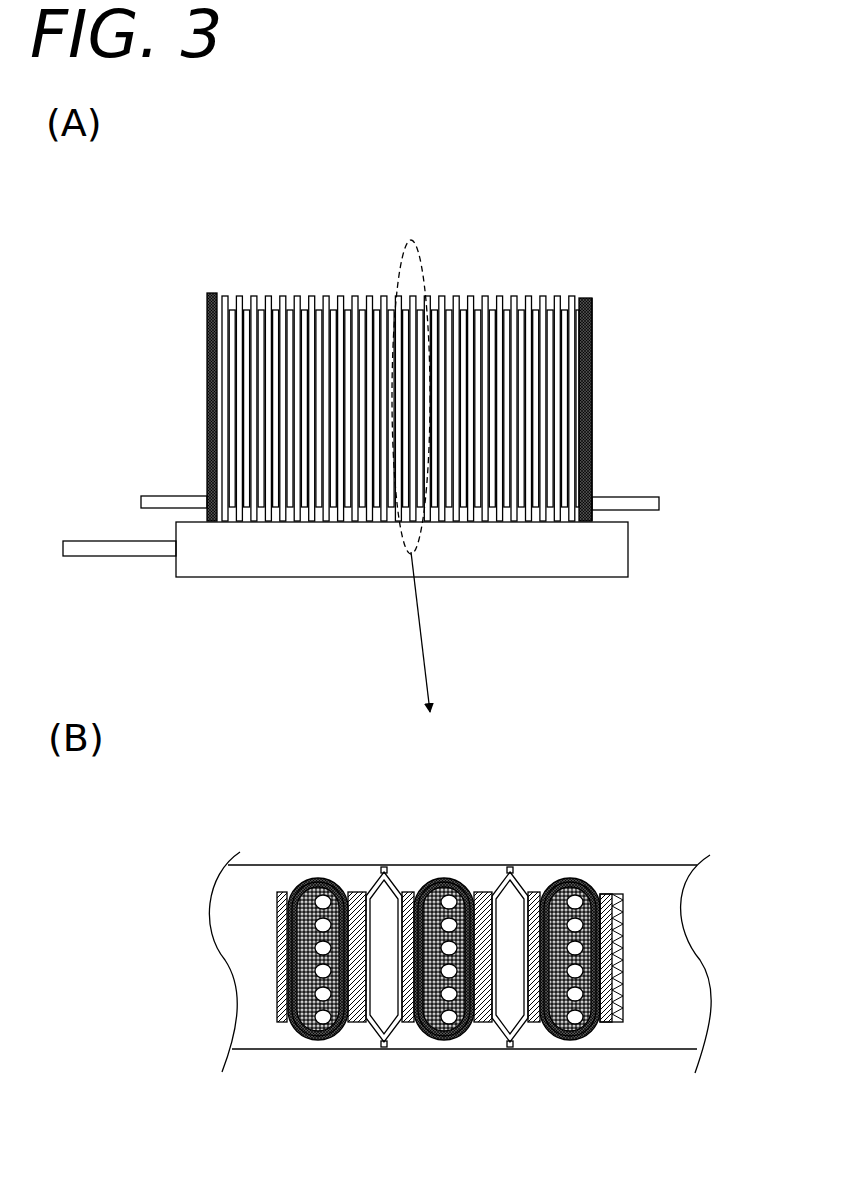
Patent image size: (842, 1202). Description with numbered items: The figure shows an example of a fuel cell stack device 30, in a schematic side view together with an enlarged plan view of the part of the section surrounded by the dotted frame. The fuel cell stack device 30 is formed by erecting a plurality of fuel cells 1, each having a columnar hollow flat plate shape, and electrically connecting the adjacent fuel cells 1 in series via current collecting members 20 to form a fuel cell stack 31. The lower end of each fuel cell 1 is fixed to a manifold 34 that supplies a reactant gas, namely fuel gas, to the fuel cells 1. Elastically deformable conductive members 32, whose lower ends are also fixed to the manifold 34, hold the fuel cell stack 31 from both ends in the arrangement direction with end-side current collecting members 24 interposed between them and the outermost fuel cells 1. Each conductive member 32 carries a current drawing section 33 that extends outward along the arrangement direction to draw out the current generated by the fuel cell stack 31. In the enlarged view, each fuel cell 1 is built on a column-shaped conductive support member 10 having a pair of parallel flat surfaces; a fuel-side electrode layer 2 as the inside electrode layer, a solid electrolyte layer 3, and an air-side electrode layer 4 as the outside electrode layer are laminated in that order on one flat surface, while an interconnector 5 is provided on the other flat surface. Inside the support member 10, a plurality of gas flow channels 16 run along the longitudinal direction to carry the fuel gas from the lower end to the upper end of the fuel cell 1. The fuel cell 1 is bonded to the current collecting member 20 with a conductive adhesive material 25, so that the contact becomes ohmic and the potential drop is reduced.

The fuel cell stack device 30 is at (232, 178).
The fuel cell stack 31 is at (205, 287).
The end-side current collecting member 24 is at (578, 314).
The conductive member 32 is at (592, 392).
The current drawing section 33 is at (659, 503).
The manifold 34 is at (608, 545).
The current collecting member 20 is at (363, 323).
The fuel cell 1 is at (534, 682).
The air-side electrode layer 4 is at (535, 893).
The interconnector 5 is at (613, 897).
The gas flow channel 16 is at (557, 1022).
The conductive support member 10 is at (573, 1020).
The solid electrolyte layer 3 is at (576, 1040).
The fuel-side electrode layer 2 is at (597, 1040).
The conductive adhesive material 25 is at (620, 1022).